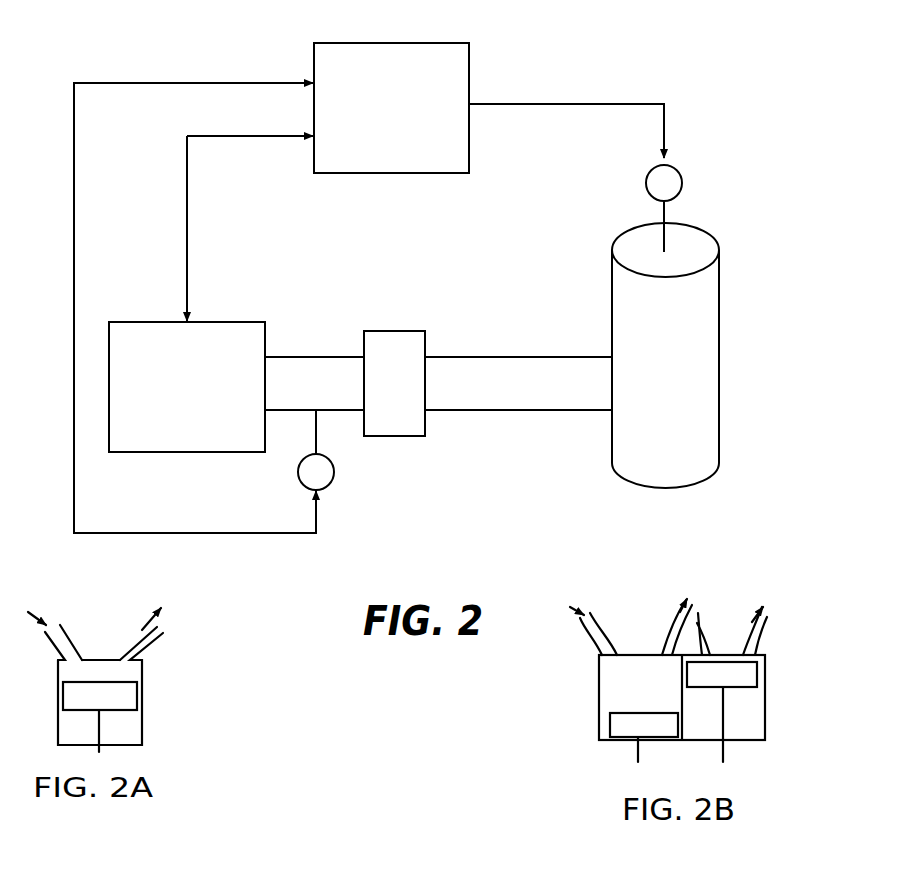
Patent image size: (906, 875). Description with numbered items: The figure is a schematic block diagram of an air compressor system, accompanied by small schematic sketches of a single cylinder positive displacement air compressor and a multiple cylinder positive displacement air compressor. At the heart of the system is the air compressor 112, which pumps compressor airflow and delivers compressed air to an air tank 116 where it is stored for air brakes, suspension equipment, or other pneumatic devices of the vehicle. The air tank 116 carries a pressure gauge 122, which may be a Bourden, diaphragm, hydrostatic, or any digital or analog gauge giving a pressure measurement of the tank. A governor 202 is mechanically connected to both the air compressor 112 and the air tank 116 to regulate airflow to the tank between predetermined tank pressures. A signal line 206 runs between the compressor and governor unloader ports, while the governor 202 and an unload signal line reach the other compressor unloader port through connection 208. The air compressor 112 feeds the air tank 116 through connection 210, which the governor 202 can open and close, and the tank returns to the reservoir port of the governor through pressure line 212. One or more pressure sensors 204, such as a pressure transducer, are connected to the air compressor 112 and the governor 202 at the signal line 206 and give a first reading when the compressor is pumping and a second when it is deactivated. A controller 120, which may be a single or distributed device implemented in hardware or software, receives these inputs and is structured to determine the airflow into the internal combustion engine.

The air compressor 112 is at (170, 404).
The air tank 116 is at (705, 342).
The controller 120 is at (378, 114).
The pressure gauge 122 is at (664, 128).
The governor 202 is at (387, 330).
The pressure sensor 204 is at (335, 467).
The signal line 206 is at (292, 410).
The connection 208 is at (325, 355).
The connection 210 is at (503, 353).
The pressure line 212 is at (514, 412).